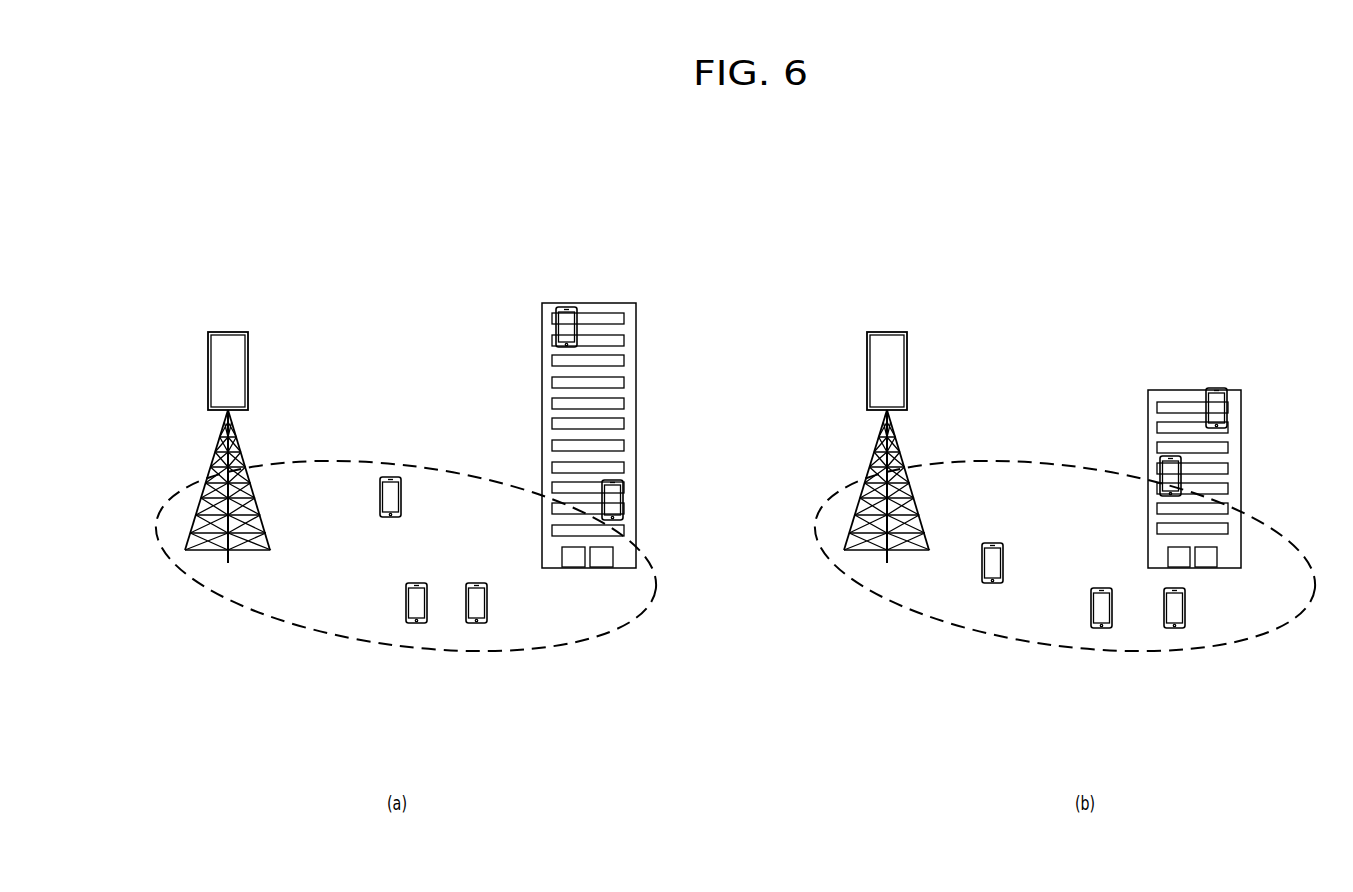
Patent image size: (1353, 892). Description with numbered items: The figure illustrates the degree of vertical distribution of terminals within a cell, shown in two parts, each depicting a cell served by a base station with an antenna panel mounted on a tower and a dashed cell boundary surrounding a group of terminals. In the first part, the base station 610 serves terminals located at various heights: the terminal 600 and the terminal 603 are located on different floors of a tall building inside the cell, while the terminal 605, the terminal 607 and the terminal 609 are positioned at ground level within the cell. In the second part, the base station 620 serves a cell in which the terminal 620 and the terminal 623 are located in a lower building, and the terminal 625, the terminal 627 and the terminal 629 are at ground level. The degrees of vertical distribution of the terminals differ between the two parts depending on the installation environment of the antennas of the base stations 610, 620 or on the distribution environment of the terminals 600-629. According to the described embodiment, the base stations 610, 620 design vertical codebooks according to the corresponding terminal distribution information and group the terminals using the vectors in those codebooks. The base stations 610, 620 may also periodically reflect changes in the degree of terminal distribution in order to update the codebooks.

The terminal 600 is at (577, 318).
The terminal 603 is at (623, 492).
The terminal 605 is at (383, 513).
The terminal 607 is at (416, 624).
The terminal 609 is at (478, 624).
The base station 610 is at (215, 455).
The base station 620 is at (874, 455).
The terminal 623 is at (1182, 469).
The terminal 625 is at (990, 584).
The terminal 627 is at (1103, 628).
The terminal 629 is at (1173, 628).